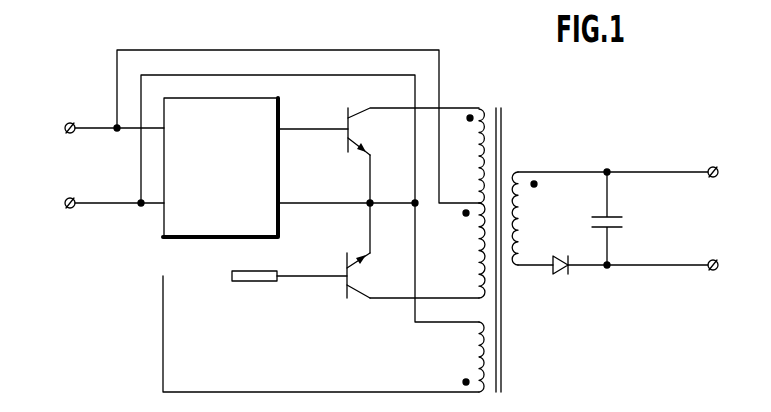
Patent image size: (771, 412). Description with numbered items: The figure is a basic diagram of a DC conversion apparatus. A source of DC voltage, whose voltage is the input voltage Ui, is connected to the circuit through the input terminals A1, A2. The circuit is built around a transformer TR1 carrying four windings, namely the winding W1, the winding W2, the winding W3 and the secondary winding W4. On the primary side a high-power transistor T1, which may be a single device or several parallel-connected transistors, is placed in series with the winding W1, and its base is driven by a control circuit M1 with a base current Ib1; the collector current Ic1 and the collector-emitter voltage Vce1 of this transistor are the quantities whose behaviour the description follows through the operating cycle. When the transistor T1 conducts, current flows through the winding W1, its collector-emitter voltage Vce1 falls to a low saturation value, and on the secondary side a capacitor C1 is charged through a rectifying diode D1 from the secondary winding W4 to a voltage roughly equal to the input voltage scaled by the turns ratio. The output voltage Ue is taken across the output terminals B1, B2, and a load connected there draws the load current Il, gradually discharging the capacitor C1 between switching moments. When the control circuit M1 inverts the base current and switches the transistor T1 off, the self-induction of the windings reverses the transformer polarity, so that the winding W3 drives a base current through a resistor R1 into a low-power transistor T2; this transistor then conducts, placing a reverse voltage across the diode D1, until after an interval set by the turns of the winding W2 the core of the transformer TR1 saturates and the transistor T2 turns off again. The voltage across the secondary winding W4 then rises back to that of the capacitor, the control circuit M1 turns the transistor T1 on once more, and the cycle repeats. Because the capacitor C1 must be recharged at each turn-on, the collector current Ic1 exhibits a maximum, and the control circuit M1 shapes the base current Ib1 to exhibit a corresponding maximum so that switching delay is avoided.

The input terminal A1 is at (60, 209).
The input terminal A2 is at (63, 123).
The output terminal B1 is at (710, 166).
The output terminal B2 is at (710, 272).
The control circuit M1 is at (173, 223).
The high-power transistor T1 is at (344, 111).
The low-power transistor T2 is at (341, 291).
The resistor R1 is at (289, 289).
The transformer TR1 is at (503, 384).
The winding W1 is at (478, 160).
The winding W2 is at (478, 257).
The winding W3 is at (478, 355).
The secondary winding W4 is at (522, 213).
The capacitor C1 is at (617, 218).
The rectifying diode D1 is at (563, 278).
The input voltage Ui is at (95, 133).
The output voltage Ue is at (679, 260).
The base current Ib1 is at (309, 141).
The collector current Ic1 is at (397, 98).
The collector-emitter voltage Vce1 is at (391, 113).
The load current Il is at (651, 279).